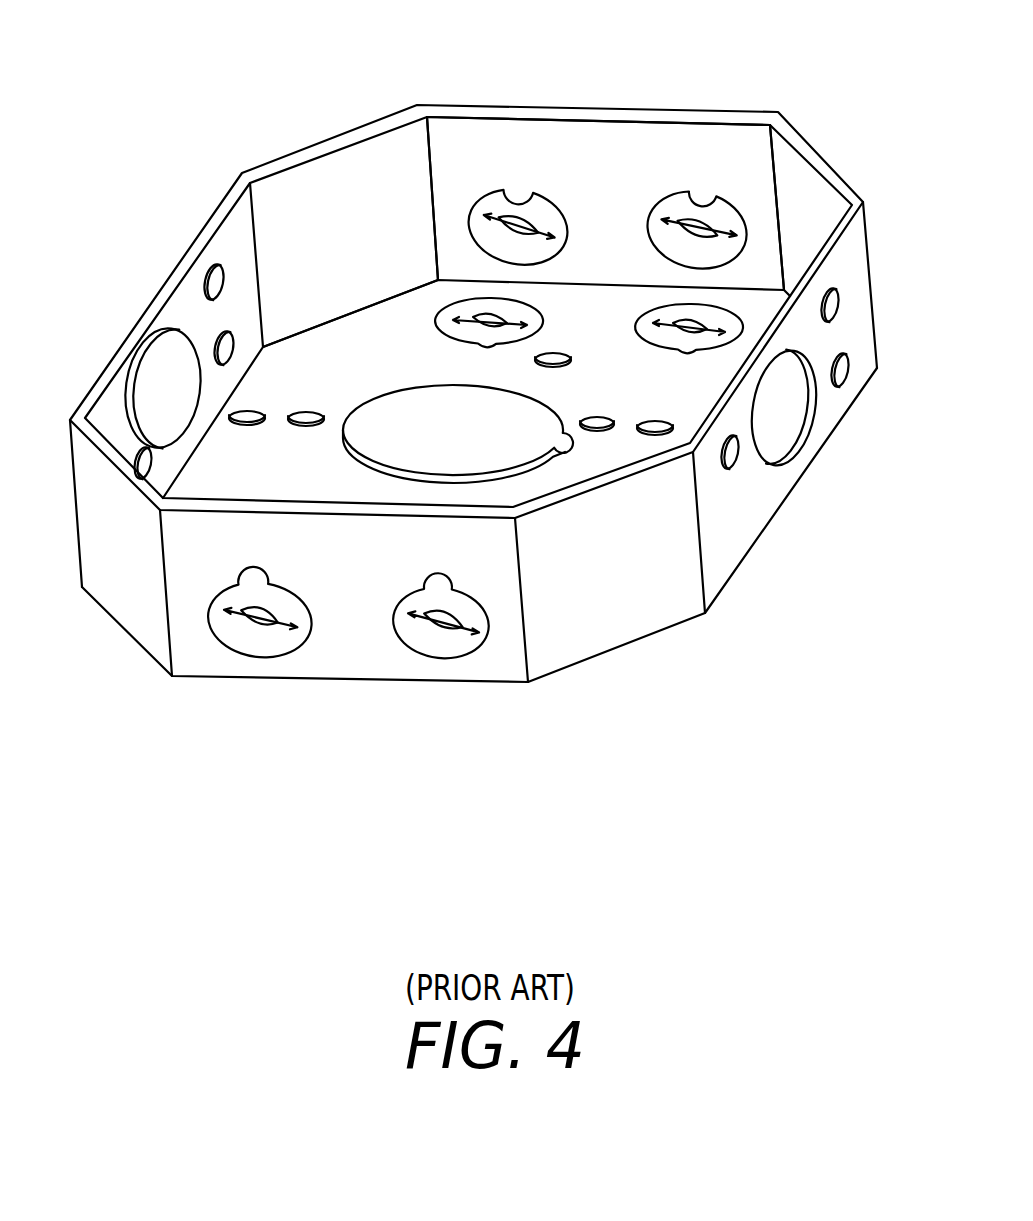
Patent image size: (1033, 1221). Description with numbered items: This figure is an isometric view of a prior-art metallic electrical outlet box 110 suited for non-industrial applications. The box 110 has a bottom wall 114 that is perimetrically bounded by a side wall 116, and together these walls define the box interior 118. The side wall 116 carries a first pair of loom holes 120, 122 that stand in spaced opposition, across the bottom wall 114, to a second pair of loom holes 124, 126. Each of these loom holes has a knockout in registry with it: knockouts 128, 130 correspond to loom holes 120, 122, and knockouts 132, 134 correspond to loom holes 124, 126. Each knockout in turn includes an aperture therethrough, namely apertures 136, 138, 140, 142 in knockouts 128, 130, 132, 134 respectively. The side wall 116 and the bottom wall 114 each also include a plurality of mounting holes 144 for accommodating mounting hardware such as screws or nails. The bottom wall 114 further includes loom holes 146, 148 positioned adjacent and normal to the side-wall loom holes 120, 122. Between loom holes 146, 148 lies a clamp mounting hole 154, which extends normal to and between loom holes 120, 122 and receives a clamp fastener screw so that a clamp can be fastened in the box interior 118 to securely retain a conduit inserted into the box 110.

The electrical outlet box 110 is at (197, 52).
The bottom wall 114 is at (298, 353).
The side wall 116 is at (337, 168).
The box interior 118 is at (413, 143).
The loom hole 120 is at (543, 187).
The loom hole 122 is at (657, 197).
The loom hole 124 is at (283, 662).
The loom hole 126 is at (433, 665).
The knockout 128 is at (481, 203).
The knockout 130 is at (713, 223).
The knockout 132 is at (268, 640).
The knockout 134 is at (457, 650).
The aperture 136 is at (505, 230).
The aperture 138 is at (728, 218).
The aperture 140 is at (255, 613).
The aperture 142 is at (462, 627).
The mounting holes 144 is at (307, 405).
The loom hole 146 is at (440, 328).
The loom hole 148 is at (635, 327).
The clamp mounting hole 154 is at (527, 360).